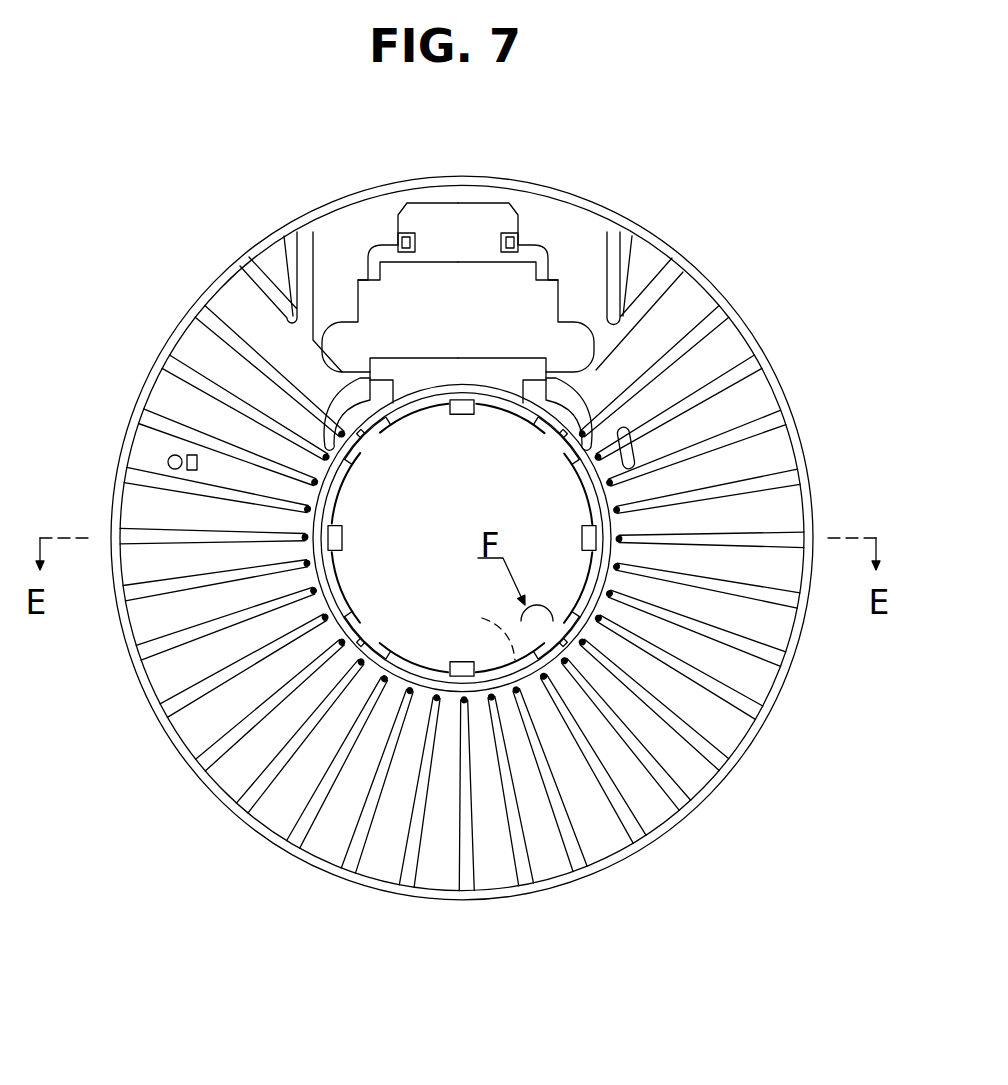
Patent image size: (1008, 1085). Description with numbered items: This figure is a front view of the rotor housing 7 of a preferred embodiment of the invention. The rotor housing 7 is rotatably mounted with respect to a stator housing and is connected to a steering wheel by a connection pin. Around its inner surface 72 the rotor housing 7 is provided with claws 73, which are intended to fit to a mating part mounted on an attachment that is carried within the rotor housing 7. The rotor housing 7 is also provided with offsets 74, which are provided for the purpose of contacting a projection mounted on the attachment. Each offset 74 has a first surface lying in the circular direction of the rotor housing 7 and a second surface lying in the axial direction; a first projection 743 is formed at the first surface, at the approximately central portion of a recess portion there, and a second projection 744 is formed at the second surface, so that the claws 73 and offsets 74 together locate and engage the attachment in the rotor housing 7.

The rotor housing 7 is at (701, 272).
The inner surface 72 is at (430, 690).
The claws 73 is at (456, 400).
The offsets 74 is at (395, 403).
The first projection 743 is at (372, 443).
The second projection 744 is at (528, 428).